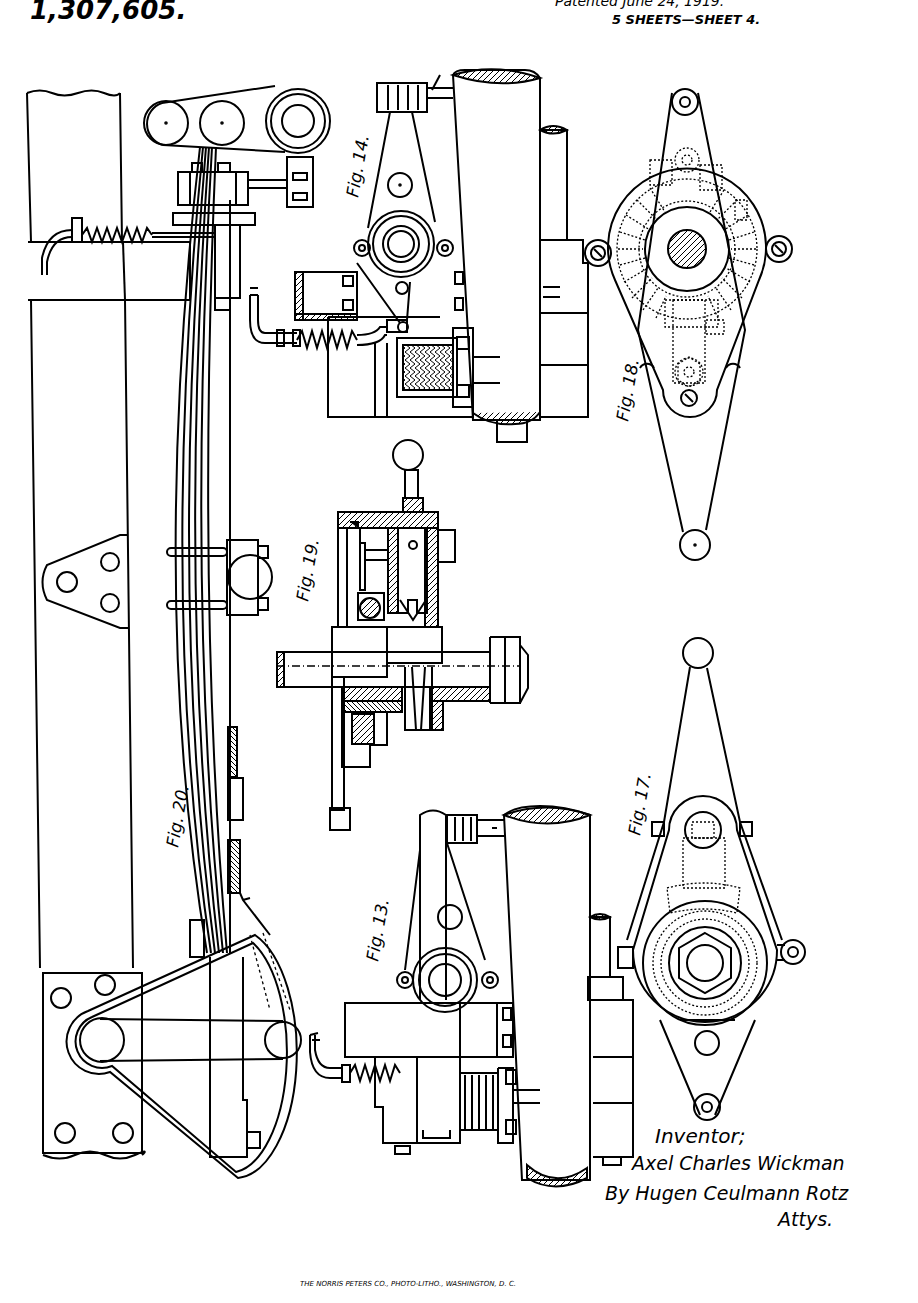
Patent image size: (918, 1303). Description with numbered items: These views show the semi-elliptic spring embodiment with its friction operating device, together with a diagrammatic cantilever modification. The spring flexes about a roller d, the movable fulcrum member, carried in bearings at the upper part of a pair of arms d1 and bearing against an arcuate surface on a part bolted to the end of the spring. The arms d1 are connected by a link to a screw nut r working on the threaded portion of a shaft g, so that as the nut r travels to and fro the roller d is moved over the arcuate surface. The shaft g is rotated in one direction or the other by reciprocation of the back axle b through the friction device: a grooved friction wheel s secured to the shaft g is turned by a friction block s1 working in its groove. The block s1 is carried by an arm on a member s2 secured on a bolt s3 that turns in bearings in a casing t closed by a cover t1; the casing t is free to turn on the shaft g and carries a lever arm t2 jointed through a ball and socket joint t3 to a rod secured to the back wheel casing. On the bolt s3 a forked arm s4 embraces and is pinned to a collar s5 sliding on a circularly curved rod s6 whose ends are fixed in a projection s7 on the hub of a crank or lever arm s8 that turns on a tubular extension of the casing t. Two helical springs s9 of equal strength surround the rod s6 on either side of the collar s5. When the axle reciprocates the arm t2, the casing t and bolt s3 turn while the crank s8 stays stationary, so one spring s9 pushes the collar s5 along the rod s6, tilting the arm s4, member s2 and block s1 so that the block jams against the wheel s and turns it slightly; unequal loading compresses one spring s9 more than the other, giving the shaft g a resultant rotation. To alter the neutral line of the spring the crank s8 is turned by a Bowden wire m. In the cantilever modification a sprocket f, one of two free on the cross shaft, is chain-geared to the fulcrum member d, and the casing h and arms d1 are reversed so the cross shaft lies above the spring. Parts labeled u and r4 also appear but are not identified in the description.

In FIG. 20, the frame / bracket u is at (121, 625).
In FIG. 13, the frame / bracket u is at (383, 1025).
In FIG. 20, the sprocket f is at (298, 121).
In FIG. 20, the bracket r4 is at (250, 190).
In FIG. 14, the Bowden wire m is at (254, 290).
In FIG. 13, the Bowden wire m is at (313, 1035).
In FIG. 20, the shaft g is at (232, 690).
In FIG. 19, the shaft g is at (295, 668).
In FIG. 18, the shaft g is at (687, 249).
In FIG. 17, the shaft g is at (710, 965).
In FIG. 20, the screw nut r is at (240, 800).
In FIG. 20, the arms d1 is at (190, 1040).
In FIG. 20, the roller d is at (280, 1042).
In FIG. 14, the back axle b is at (490, 110).
In FIG. 13, the back axle b is at (537, 840).
In FIG. 14, the casing t is at (401, 244).
In FIG. 19, the casing t is at (360, 512).
In FIG. 13, the casing t is at (447, 912).
In FIG. 18, the casing t is at (718, 350).
In FIG. 17, the casing t is at (665, 1000).
In FIG. 14, the cover t1 is at (437, 73).
In FIG. 19, the cover t1 is at (352, 530).
In FIG. 13, the cover t1 is at (492, 828).
In FIG. 14, the lever arm t2 is at (400, 165).
In FIG. 17, the lever arm t2 is at (695, 755).
In FIG. 14, the ball and socket joint t3 is at (392, 83).
In FIG. 13, the ball and socket joint t3 is at (455, 813).
In FIG. 18, the ball and socket joint t3 is at (695, 545).
In FIG. 17, the ball and socket joint t3 is at (688, 655).
In FIG. 19, the grooved friction wheel s is at (425, 600).
In FIG. 17, the grooved friction wheel s is at (750, 940).
In FIG. 19, the friction block s1 is at (425, 580).
In FIG. 17, the friction block s1 is at (725, 885).
In FIG. 17, the member s2 is at (690, 830).
In FIG. 19, the bolt s3 is at (352, 524).
In FIG. 18, the bolt s3 is at (682, 383).
In FIG. 19, the forked arm s4 is at (360, 560).
In FIG. 18, the forked arm s4 is at (673, 335).
In FIG. 19, the collar s5 is at (358, 608).
In FIG. 18, the collar s5 is at (724, 327).
In FIG. 19, the circularly curved rod s6 is at (370, 600).
In FIG. 18, the circularly curved rod s6 is at (735, 210).
In FIG. 19, the projection s7 is at (370, 745).
In FIG. 18, the projection s7 is at (698, 165).
In FIG. 14, the crank or lever arm s8 is at (358, 270).
In FIG. 19, the crank or lever arm s8 is at (338, 780).
In FIG. 18, the crank or lever arm s8 is at (673, 140).
In FIG. 17, the crank or lever arm s8 is at (713, 1085).
In FIG. 18, the helical spring s9 is at (640, 215).
In FIG. 13, the casing h is at (387, 1097).